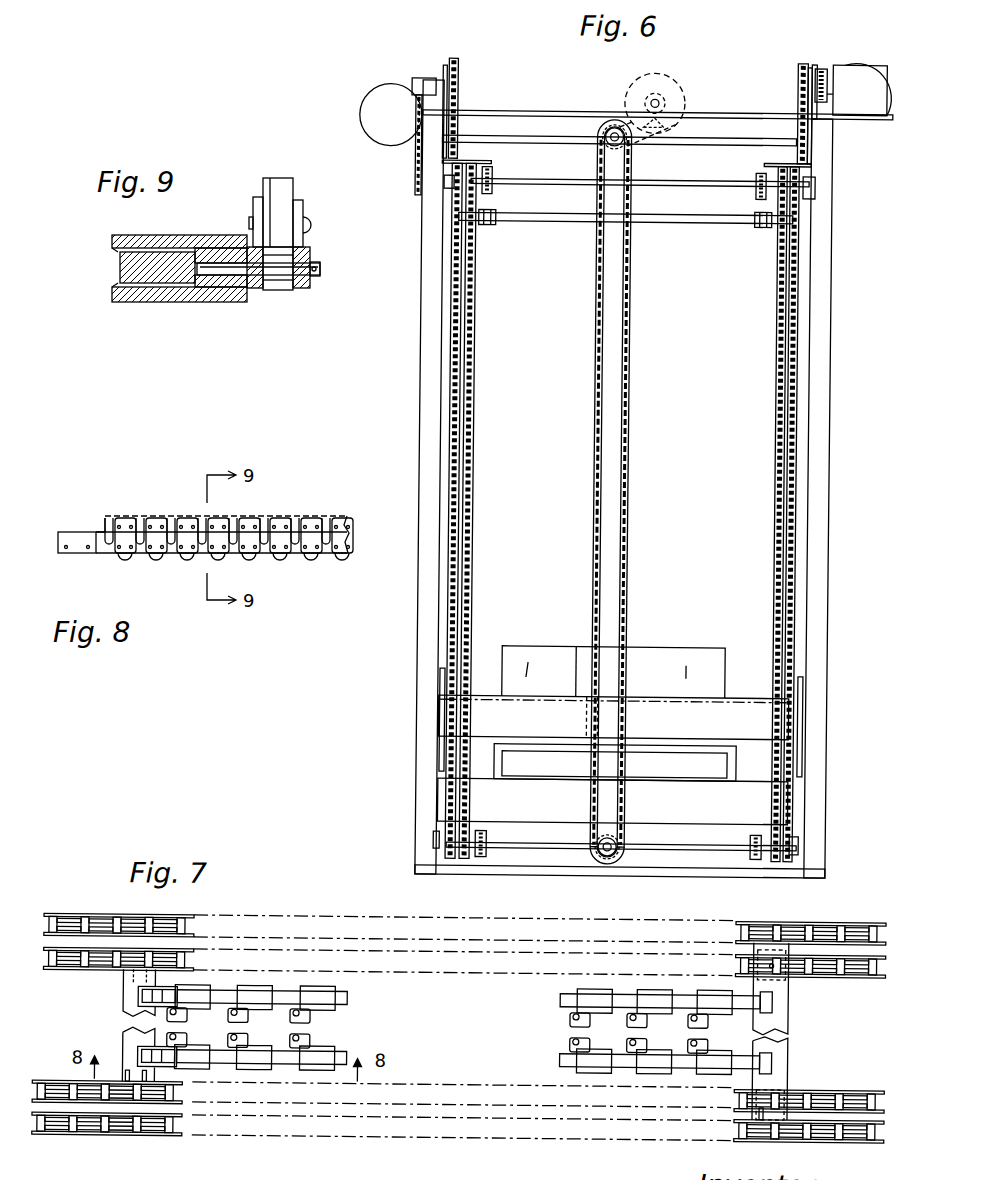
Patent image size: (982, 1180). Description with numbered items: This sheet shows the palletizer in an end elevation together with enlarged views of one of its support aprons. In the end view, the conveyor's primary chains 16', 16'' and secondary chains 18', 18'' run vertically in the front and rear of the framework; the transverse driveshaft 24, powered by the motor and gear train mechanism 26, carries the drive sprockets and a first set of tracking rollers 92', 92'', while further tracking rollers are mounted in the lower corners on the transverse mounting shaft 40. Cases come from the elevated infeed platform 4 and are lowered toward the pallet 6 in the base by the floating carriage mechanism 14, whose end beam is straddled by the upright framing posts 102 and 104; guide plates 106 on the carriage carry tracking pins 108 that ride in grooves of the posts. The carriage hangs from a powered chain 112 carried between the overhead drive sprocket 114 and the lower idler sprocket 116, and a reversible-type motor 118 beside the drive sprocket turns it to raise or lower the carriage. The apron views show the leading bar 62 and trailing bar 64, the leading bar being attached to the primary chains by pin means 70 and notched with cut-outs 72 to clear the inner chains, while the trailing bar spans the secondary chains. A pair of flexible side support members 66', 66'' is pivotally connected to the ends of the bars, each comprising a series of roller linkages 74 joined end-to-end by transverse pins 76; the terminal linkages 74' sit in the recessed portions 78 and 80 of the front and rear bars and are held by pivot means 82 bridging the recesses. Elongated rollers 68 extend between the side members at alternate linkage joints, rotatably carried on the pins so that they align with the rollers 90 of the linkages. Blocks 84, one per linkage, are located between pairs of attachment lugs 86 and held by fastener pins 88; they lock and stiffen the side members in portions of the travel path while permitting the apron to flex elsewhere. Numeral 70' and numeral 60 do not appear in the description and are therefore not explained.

In FIG. 6, the infeed station or platform 4 is at (815, 56).
In FIG. 6, the pallet 6 is at (558, 757).
In FIG. 6, the floating carriage mechanism 14 is at (735, 695).
In FIG. 6, the primary chain 16' is at (829, 225).
In FIG. 7, the primary chain 16' is at (119, 909).
In FIG. 6, the primary chain 16'' is at (420, 246).
In FIG. 7, the primary chain 16'' is at (457, 1142).
In FIG. 6, the secondary chain 18' is at (764, 514).
In FIG. 7, the secondary chain 18' is at (118, 973).
In FIG. 6, the secondary chain 18'' is at (485, 511).
In FIG. 7, the secondary chain 18'' is at (458, 1086).
In FIG. 6, the transverse driveshaft 24 is at (537, 182).
In FIG. 6, the motor and gear train mechanism 26 is at (403, 88).
In FIG. 6, the transverse mounting shaft 40 is at (533, 847).
In FIG. 6, the drive shaft 60 is at (571, 226).
In FIG. 7, the drive shaft 60 is at (335, 913).
In FIG. 7, the leading bar 62 is at (790, 1031).
In FIG. 8, the trailing bar 64 is at (72, 534).
In FIG. 7, the trailing bar 64 is at (120, 1058).
In FIG. 7, the flexible side support member 66' is at (415, 1028).
In FIG. 7, the flexible side support member 66'' is at (483, 1029).
In FIG. 9, the elongated rollers 68 is at (166, 303).
In FIG. 7, the elongated rollers 68 is at (298, 1016).
In FIG. 7, the pin means 70 is at (425, 1056).
In FIG. 7, the bolt 70' is at (715, 966).
In FIG. 7, the notches or cut-outs 72 is at (776, 977).
In FIG. 8, the roller linkages 74 is at (167, 552).
In FIG. 8, the terminal linkages 74' is at (85, 567).
In FIG. 9, the transverse pins 76 is at (316, 266).
In FIG. 8, the transverse pins 76 is at (316, 550).
In FIG. 7, the recessed portion 78 is at (773, 1006).
In FIG. 7, the recessed portion 80 is at (138, 1003).
In FIG. 7, the pivot means 82 is at (160, 991).
In FIG. 9, the blocks or bars 84 is at (284, 178).
In FIG. 8, the blocks or bars 84 is at (190, 516).
In FIG. 9, the attachment lugs or ears 86 is at (253, 212).
In FIG. 8, the attachment lugs or ears 86 is at (284, 520).
In FIG. 9, the fastener pins 88 is at (311, 226).
In FIG. 8, the fastener pins 88 is at (322, 526).
In FIG. 9, the rollers of the linkage 90 is at (283, 291).
In FIG. 6, the tracking roller 92' is at (752, 524).
In FIG. 6, the tracking roller 92'' is at (623, 513).
In FIG. 6, the upright framing post 102 is at (815, 808).
In FIG. 6, the upright framing post 104 is at (420, 792).
In FIG. 6, the guide plates 106 is at (446, 702).
In FIG. 6, the tracking pins 108 is at (434, 686).
In FIG. 6, the powered chain 112 is at (627, 362).
In FIG. 6, the overhead drive sprocket 114 is at (600, 133).
In FIG. 6, the lower idler sprocket 116 is at (600, 852).
In FIG. 6, the reversible-type motor 118 is at (680, 92).